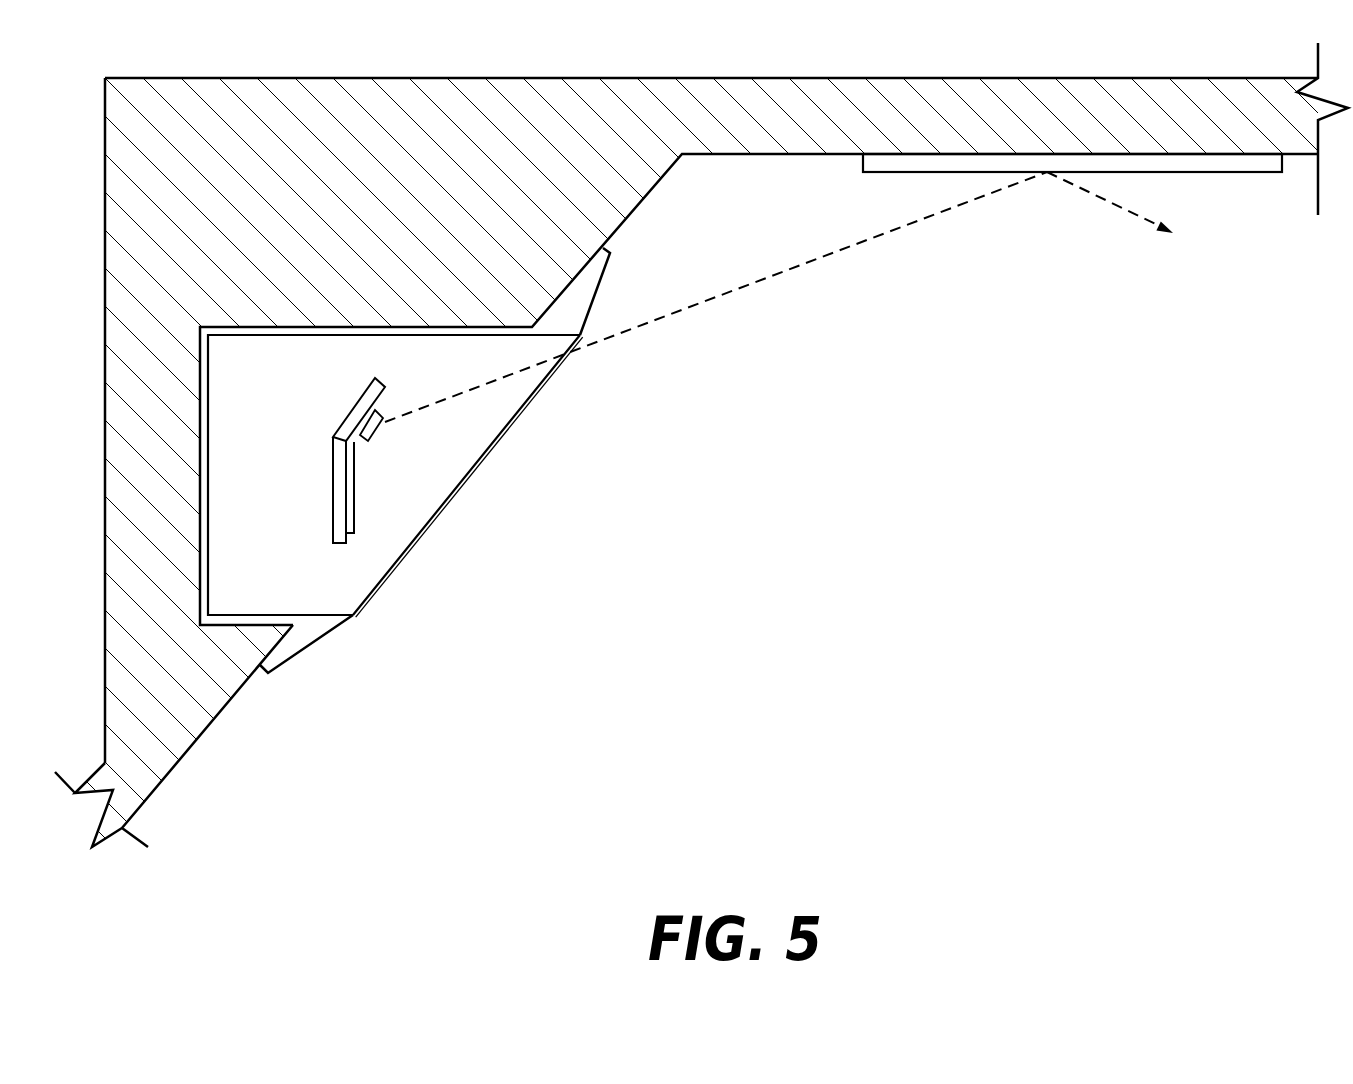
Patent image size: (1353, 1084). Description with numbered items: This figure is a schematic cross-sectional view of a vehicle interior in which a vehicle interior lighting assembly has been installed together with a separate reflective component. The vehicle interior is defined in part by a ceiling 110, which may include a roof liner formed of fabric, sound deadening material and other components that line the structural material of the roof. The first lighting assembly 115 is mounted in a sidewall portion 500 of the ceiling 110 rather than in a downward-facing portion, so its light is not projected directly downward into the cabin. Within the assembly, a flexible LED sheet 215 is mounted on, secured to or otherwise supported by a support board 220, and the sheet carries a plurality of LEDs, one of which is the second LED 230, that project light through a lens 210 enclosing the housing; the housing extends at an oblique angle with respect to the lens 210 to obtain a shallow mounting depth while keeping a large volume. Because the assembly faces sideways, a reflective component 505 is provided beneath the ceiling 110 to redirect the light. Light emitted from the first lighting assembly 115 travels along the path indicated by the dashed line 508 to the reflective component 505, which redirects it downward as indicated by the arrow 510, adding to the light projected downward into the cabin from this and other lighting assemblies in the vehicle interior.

The ceiling 110 is at (763, 158).
The first lighting assembly 115 is at (590, 412).
The lens 210 is at (430, 523).
The flexible LED sheet 215 is at (360, 491).
The support board 220 is at (342, 553).
The second LED 230 is at (384, 414).
The sidewall portion 500 is at (216, 725).
The reflective component 505 is at (1222, 162).
The dashed line 508 is at (813, 262).
The arrow 510 is at (1110, 200).